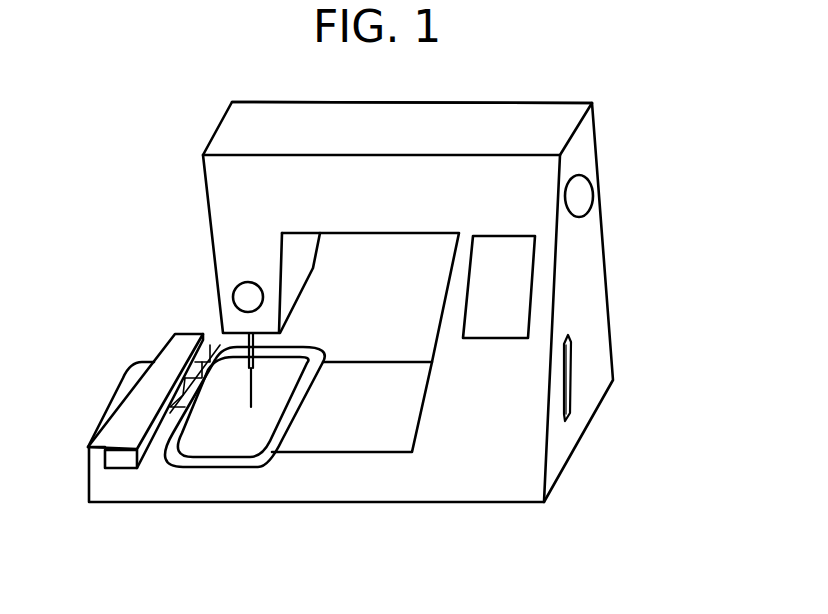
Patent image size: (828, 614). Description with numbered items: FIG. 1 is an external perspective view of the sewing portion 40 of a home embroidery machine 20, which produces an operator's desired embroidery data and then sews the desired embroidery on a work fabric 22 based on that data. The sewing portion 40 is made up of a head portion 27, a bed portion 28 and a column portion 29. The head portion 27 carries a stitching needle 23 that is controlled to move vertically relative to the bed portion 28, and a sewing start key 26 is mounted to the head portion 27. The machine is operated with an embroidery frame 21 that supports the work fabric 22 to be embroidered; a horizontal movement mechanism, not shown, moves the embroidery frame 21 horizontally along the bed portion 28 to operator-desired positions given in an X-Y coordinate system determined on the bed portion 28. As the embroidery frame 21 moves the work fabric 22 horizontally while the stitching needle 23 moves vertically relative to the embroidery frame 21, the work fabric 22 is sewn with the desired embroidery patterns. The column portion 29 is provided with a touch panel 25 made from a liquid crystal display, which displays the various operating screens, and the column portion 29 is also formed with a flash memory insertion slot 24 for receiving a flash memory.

The home embroidery machine 20 is at (676, 223).
The sewing portion 40 is at (157, 158).
The embroidery frame 21 is at (235, 462).
The work fabric 22 is at (205, 438).
The stitching needle 23 is at (253, 372).
The flash memory insertion slot 24 is at (572, 358).
The touch panel 25 is at (533, 288).
The sewing start key 26 is at (233, 297).
The head portion 27 is at (270, 123).
The bed portion 28 is at (100, 437).
The column portion 29 is at (598, 131).